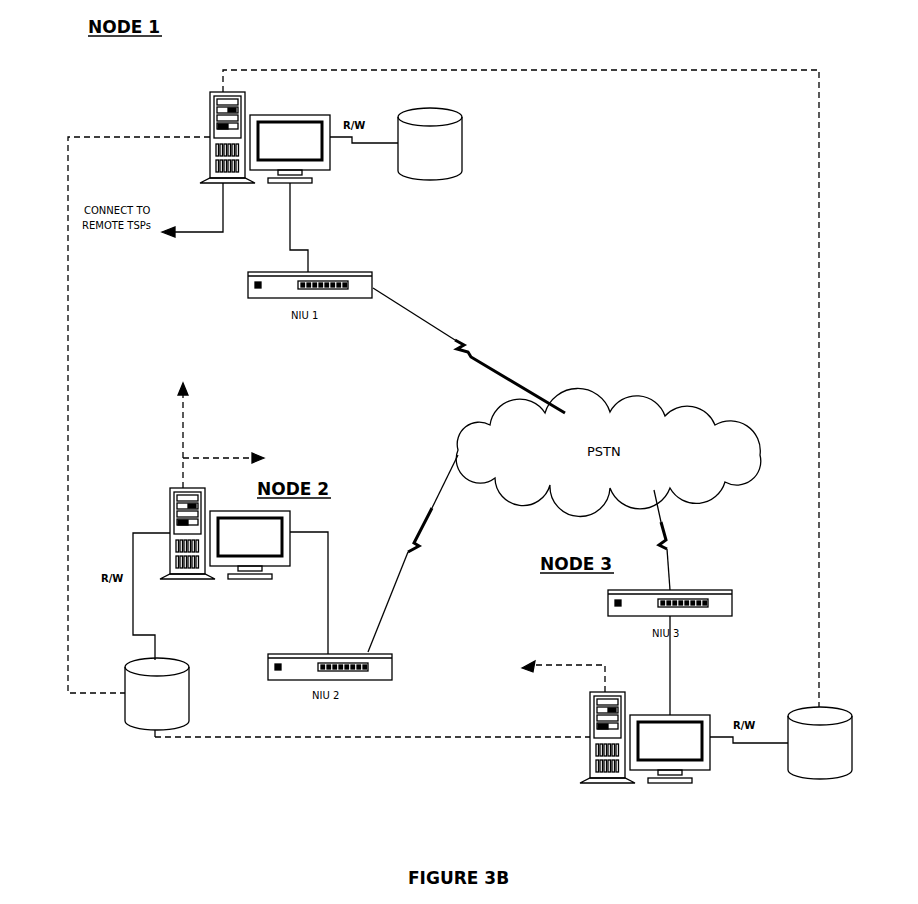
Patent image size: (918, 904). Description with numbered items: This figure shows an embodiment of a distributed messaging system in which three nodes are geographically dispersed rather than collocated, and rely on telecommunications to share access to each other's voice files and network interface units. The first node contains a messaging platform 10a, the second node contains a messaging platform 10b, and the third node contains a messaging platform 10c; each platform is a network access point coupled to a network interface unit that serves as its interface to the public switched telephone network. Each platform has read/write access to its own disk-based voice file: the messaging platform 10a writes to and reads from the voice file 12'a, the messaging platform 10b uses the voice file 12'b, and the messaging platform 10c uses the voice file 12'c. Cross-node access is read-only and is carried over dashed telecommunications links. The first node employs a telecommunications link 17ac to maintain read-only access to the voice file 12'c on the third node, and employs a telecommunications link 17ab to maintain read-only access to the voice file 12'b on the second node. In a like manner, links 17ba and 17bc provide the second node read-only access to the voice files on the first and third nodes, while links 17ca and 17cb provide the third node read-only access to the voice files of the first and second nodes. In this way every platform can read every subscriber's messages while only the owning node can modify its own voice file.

The messaging platform 10a is at (265, 156).
The messaging platform 10b is at (225, 552).
The messaging platform 10c is at (645, 755).
The voice file 12'a is at (458, 142).
The voice file 12'b is at (121, 694).
The voice file 12'c is at (833, 733).
The telecommunications link 17ac is at (400, 65).
The telecommunications link 17ab is at (67, 263).
The telecommunications link 17ba is at (185, 433).
The telecommunications link 17bc is at (237, 457).
The telecommunications link 17ca is at (583, 665).
The telecommunications link 17cb is at (248, 742).